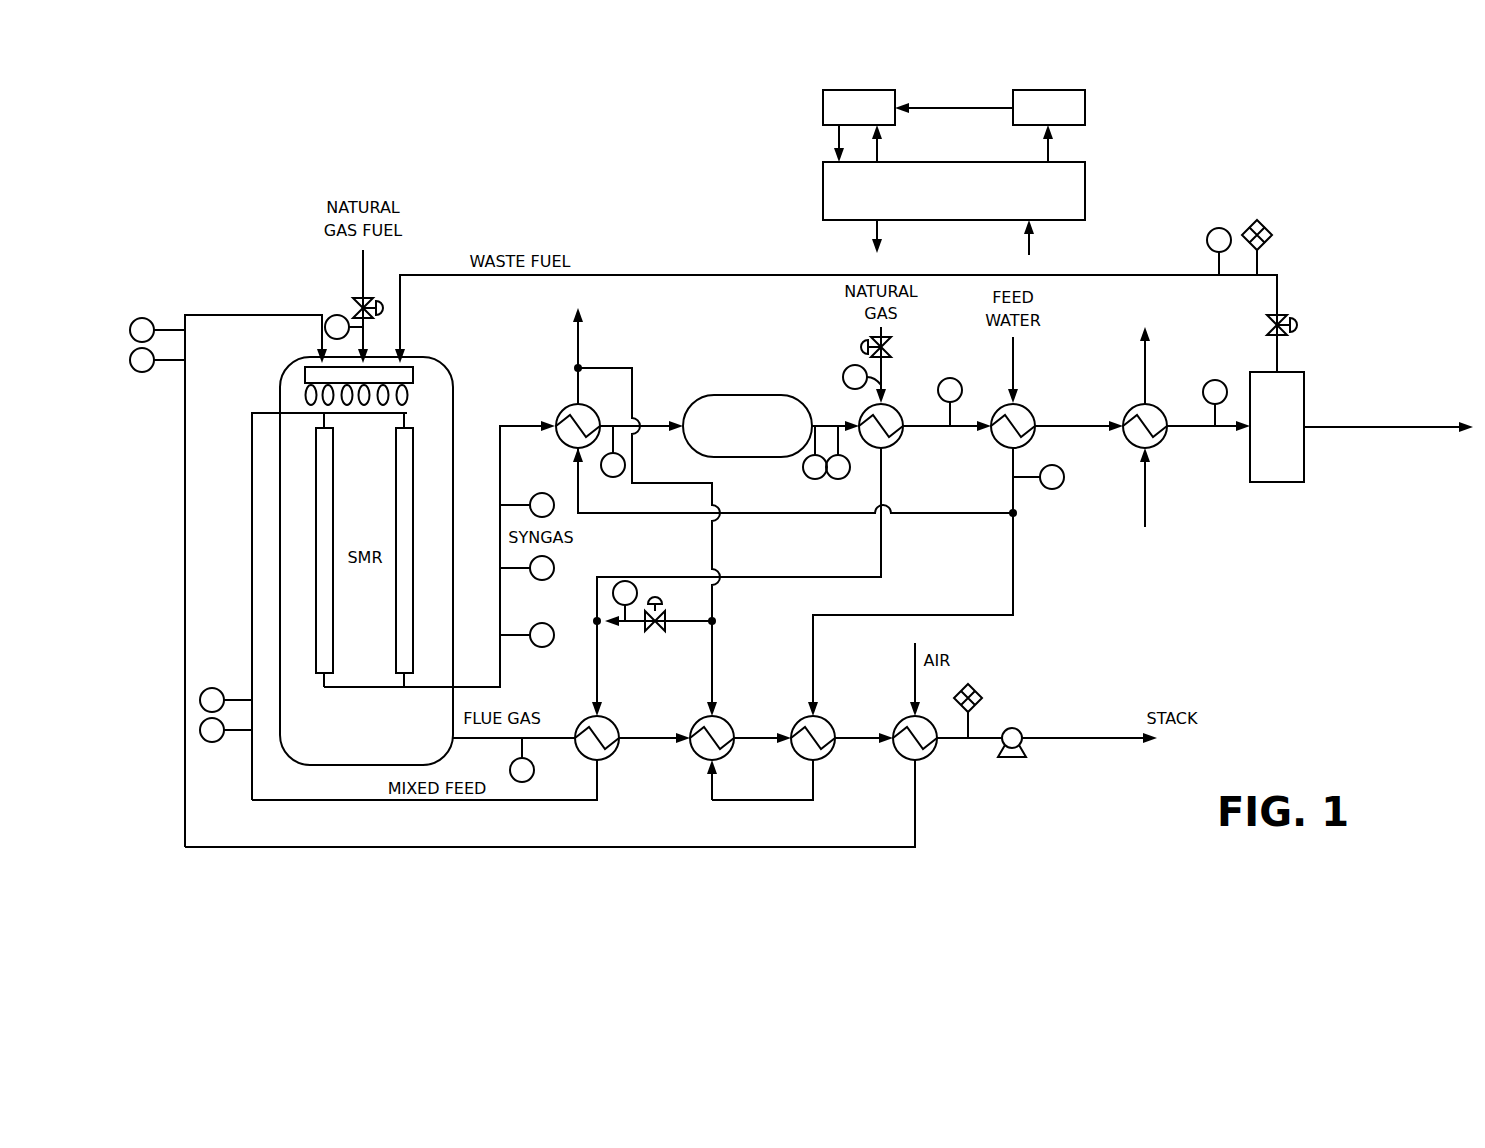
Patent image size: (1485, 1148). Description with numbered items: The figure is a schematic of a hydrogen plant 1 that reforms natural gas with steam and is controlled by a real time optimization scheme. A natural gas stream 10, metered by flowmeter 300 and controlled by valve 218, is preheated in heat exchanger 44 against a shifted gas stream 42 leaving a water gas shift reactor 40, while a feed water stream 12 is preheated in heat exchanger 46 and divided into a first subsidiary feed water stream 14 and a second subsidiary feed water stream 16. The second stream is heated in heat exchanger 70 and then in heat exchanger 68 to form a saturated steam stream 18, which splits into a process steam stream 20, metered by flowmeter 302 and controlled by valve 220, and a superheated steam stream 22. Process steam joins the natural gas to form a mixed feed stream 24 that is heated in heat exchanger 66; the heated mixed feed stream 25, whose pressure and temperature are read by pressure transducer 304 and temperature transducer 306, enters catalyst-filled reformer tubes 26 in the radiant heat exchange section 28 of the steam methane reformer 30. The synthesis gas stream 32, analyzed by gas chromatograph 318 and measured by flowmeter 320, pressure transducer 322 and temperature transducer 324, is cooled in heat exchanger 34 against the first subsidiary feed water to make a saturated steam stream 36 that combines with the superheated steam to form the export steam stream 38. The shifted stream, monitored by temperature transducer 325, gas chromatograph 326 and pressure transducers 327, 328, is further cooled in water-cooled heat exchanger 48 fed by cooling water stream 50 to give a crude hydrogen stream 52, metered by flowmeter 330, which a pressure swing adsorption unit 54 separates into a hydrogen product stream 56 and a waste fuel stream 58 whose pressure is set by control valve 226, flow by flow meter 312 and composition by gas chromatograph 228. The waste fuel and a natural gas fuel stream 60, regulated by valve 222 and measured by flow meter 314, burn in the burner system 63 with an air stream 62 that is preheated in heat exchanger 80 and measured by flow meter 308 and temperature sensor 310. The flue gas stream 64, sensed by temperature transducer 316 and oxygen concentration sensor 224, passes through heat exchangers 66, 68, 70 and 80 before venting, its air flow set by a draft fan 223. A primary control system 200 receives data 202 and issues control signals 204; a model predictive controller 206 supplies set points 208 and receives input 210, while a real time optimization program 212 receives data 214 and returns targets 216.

The hydrogen plant 1 is at (1045, 797).
The natural gas stream 10 is at (885, 332).
The feed water stream 12 is at (1017, 356).
The first subsidiary feed water stream 14 is at (958, 513).
The second subsidiary feed water stream 16 is at (1020, 563).
The saturated steam stream 18 is at (712, 685).
The process steam stream 20 is at (693, 625).
The superheated steam stream 22 is at (712, 555).
The mixed feed stream 24 is at (600, 676).
The heated mixed feed stream 25 is at (597, 782).
The reformer tubes 26 is at (400, 498).
The radiant heat exchange section 28 is at (438, 530).
The steam methane reformer 30 is at (464, 364).
The synthesis gas stream 32 is at (500, 600).
The heat exchanger 34 is at (568, 405).
The saturated steam stream 36 is at (590, 385).
The export steam stream 38 is at (575, 345).
The water gas shift reactor 40 is at (745, 395).
The shifted gas stream 42 is at (830, 415).
The heat exchanger 44 is at (895, 446).
The heat exchanger 46 is at (1030, 412).
The water-cooled heat exchanger 48 is at (1152, 400).
The cooling water stream 50 is at (1145, 490).
The crude hydrogen stream 52 is at (1207, 430).
The pressure swing adsorption unit 54 is at (1280, 482).
The hydrogen product stream 56 is at (1365, 430).
The waste fuel stream 58 is at (692, 272).
The natural gas fuel stream 60 is at (360, 279).
The air stream 62 is at (185, 550).
The burner system 63 is at (408, 375).
The flue gas stream 64 is at (555, 735).
The heat exchanger 66 is at (612, 722).
The heat exchanger 68 is at (698, 770).
The heat exchanger 70 is at (828, 722).
The heat exchanger 80 is at (930, 760).
The primary control system 200 is at (1075, 193).
The data input 202 is at (1032, 246).
The control signals 204 is at (875, 232).
The model predictive controller 206 is at (868, 90).
The set point data 208 is at (833, 136).
The input 210 is at (880, 152).
The real time optimization program 212 is at (1085, 108).
The data 214 is at (1052, 152).
The targets 216 is at (948, 105).
The valve 218 is at (893, 350).
The valve 220 is at (665, 615).
The valve 222 is at (380, 305).
The draft fan 223 is at (1018, 728).
The oxygen concentration sensor 224 is at (972, 718).
The control valve 226 is at (1290, 312).
The gas chromatograph 228 is at (1265, 262).
The flowmeter 300 is at (872, 386).
The flowmeter 302 is at (632, 600).
The pressure transducer 304 is at (235, 734).
The temperature transducer 306 is at (235, 697).
The flow meter 308 is at (165, 364).
The temperature sensor 310 is at (165, 326).
The flow meter 312 is at (1210, 262).
The flow meter 314 is at (352, 320).
The temperature transducer 316 is at (536, 752).
The gas chromatograph 318 is at (515, 500).
The flowmeter 320 is at (518, 575).
The pressure transducer 322 is at (515, 640).
The temperature transducer 324 is at (600, 465).
The temperature transducer 325 is at (803, 458).
The gas chromatograph 326 is at (845, 460).
The pressure transducer 327 is at (1025, 480).
The pressure transducer 328 is at (955, 415).
The flowmeter 330 is at (1212, 415).